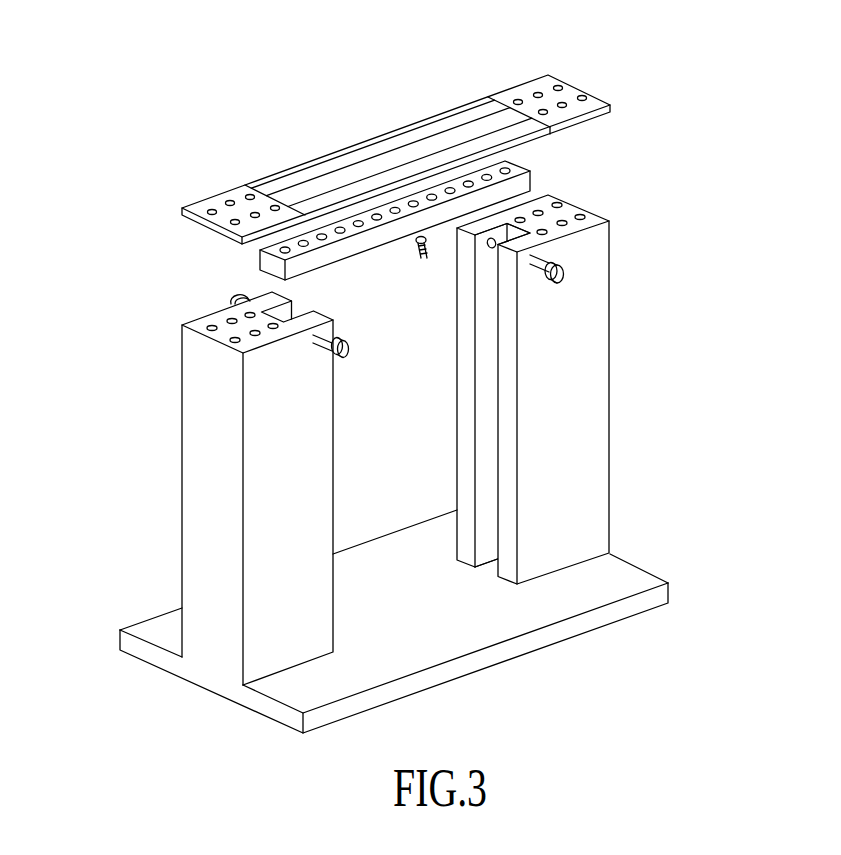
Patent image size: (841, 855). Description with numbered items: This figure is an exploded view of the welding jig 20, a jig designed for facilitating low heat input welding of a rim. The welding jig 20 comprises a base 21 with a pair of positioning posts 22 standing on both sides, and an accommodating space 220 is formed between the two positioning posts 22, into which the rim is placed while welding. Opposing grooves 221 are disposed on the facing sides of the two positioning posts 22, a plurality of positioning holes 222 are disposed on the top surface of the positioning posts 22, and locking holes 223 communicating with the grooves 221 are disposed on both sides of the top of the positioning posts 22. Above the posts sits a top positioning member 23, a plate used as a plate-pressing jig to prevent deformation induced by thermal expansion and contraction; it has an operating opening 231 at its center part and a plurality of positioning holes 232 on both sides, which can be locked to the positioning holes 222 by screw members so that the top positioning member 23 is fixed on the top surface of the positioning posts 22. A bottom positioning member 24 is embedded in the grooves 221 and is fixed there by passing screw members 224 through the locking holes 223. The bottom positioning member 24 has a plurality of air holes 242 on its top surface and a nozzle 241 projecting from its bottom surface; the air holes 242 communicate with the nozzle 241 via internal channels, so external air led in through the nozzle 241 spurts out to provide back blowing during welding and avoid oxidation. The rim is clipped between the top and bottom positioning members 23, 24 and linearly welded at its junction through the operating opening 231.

The welding jig 20 is at (697, 340).
The base 21 is at (625, 606).
The positioning posts 22 is at (199, 514).
The accommodating space 220 is at (342, 514).
The grooves 221 is at (488, 423).
The positioning holes 222 is at (558, 206).
The locking holes 223 is at (518, 263).
The screw members 224 is at (318, 347).
The top positioning member 23 is at (503, 93).
The operating opening 231 is at (386, 163).
The positioning holes 232 is at (587, 95).
The bottom positioning member 24 is at (258, 258).
The nozzle 241 is at (418, 241).
The air holes 242 is at (490, 176).